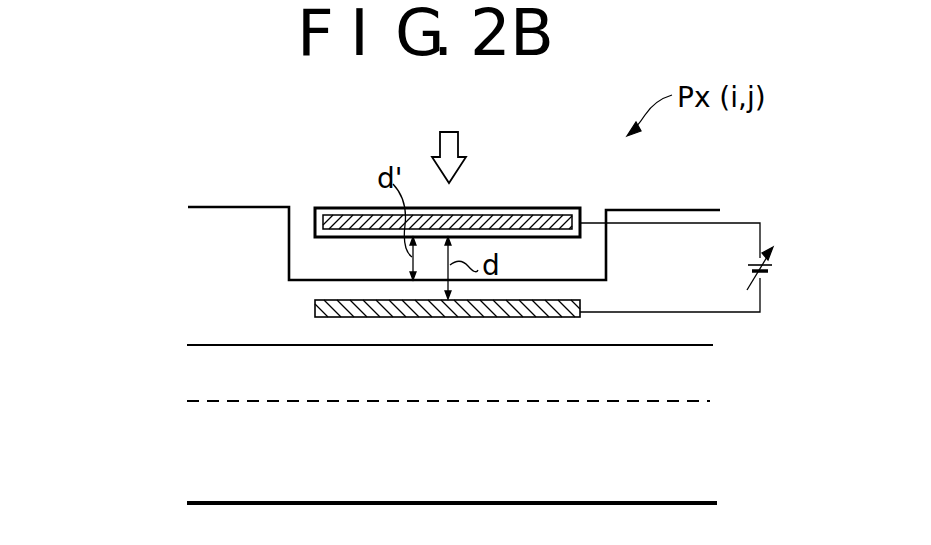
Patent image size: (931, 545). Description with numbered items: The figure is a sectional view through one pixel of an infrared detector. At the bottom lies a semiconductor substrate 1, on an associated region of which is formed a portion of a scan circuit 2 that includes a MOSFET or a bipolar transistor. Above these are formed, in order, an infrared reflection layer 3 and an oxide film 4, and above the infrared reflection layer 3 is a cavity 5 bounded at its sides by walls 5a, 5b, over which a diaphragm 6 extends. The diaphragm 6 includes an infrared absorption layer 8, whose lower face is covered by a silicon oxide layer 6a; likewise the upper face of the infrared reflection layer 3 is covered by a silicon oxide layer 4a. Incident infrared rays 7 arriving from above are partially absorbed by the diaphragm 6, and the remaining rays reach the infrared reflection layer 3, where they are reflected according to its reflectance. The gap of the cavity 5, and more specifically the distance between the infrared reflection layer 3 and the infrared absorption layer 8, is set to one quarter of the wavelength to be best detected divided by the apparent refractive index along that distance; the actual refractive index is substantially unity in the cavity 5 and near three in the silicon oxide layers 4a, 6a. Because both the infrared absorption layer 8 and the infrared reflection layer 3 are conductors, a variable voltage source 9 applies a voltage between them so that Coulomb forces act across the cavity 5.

The semiconductor substrate 1 is at (694, 461).
The scan circuit 2 is at (690, 386).
The infrared reflection layer 3 is at (315, 312).
The oxide film 4 is at (243, 257).
The silicon oxide layer 4a is at (312, 288).
The cavity 5 is at (382, 277).
The cavity side wall 5a is at (295, 224).
The cavity side wall 5b is at (602, 245).
The diaphragm 6 is at (345, 207).
The silicon oxide layer 6a is at (548, 233).
The incident infrared rays 7 is at (458, 132).
The infrared absorption layer 8 is at (536, 222).
The variable voltage source 9 is at (782, 245).